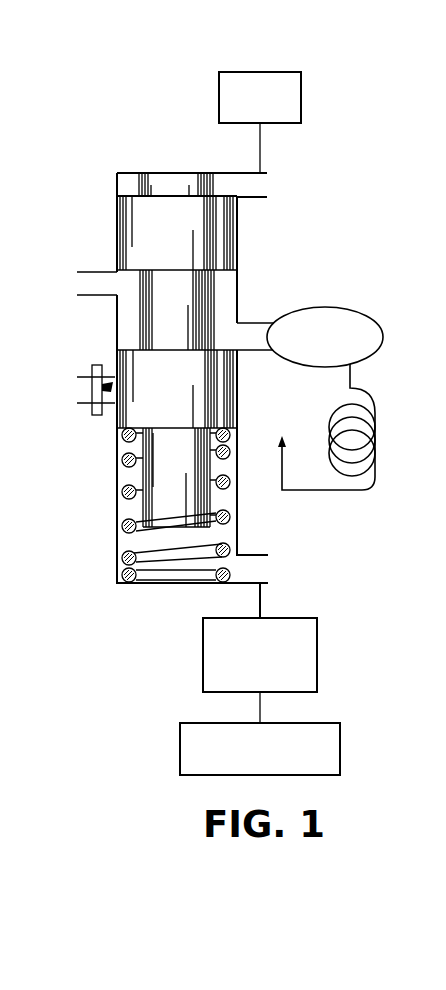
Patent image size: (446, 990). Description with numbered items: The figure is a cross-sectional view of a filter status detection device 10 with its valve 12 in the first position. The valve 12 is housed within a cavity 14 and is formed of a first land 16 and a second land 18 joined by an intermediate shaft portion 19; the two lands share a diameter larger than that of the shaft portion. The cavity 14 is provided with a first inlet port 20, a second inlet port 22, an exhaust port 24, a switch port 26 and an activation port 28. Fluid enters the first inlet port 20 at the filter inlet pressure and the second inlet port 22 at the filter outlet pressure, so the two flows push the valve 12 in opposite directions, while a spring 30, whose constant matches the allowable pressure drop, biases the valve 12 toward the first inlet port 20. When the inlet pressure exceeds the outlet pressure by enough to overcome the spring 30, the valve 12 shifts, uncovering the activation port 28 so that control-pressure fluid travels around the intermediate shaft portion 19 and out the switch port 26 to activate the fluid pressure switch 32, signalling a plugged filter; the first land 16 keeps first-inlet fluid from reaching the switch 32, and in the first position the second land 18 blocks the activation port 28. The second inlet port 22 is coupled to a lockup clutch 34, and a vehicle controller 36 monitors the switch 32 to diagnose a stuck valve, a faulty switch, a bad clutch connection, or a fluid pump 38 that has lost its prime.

The filter status detection device 10 is at (87, 116).
The valve 12 is at (126, 194).
The cavity 14 is at (121, 472).
The first land 16 is at (237, 243).
The second land 18 is at (128, 350).
The intermediate shaft portion 19 is at (213, 293).
The first inlet port 20 is at (248, 172).
The second inlet port 22 is at (245, 550).
The exhaust port 24 is at (94, 272).
The switch port 26 is at (251, 338).
The activation port 28 is at (100, 392).
The spring 30 is at (122, 528).
The fluid pressure switch 32 is at (353, 380).
The lockup clutch 34 is at (318, 660).
The vehicle controller 36 is at (342, 758).
The fluid pump 38 is at (302, 97).